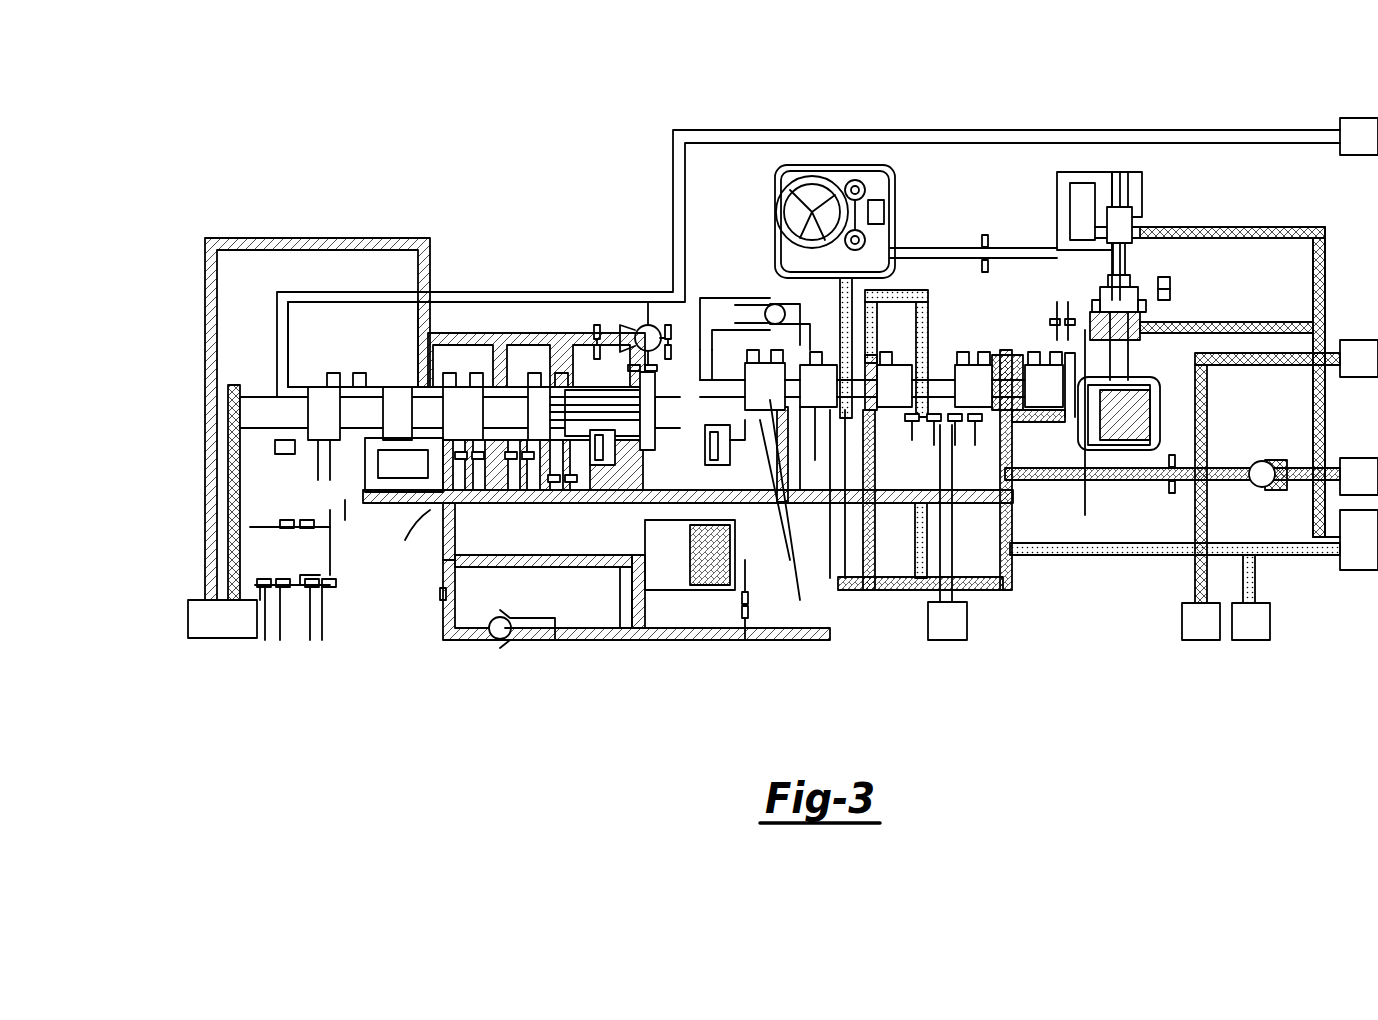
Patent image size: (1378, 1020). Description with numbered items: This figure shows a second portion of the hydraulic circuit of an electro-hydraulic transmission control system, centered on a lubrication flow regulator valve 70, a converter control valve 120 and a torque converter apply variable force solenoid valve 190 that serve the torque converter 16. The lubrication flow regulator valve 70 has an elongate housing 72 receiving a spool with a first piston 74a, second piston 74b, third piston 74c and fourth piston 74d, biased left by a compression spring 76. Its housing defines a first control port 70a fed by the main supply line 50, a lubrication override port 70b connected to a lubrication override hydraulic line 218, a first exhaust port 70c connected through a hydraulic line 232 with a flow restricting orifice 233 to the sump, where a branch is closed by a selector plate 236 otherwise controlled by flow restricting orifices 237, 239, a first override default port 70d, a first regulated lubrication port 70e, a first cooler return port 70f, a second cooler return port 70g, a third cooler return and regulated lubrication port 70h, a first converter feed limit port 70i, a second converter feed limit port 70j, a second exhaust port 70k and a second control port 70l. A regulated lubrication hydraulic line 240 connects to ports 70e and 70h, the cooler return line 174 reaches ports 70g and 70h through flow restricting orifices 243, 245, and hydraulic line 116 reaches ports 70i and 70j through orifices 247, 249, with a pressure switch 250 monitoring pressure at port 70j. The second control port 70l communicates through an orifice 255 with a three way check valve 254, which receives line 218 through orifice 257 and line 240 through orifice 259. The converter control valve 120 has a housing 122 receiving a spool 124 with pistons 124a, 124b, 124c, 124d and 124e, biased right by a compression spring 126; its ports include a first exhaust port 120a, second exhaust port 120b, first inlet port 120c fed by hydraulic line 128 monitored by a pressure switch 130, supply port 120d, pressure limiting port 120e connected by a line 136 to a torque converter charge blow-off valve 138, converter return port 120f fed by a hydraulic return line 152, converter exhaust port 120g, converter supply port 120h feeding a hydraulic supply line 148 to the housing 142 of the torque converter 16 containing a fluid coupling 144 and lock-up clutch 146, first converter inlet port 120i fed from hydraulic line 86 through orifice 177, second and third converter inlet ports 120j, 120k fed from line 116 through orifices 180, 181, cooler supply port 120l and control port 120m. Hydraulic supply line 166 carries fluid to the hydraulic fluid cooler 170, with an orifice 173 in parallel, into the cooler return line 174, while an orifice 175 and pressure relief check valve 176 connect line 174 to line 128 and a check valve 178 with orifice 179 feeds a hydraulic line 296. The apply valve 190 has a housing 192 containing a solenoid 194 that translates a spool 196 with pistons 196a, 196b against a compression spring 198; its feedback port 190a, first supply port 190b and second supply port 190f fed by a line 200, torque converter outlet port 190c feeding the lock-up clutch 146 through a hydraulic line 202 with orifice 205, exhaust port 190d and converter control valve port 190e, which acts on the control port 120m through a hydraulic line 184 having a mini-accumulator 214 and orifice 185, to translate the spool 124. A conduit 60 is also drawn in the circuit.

The torque converter 16 is at (893, 168).
The main supply line 50 is at (228, 492).
The conduit 60 is at (1235, 372).
The lubrication flow regulator valve 70 is at (308, 328).
The first control port 70a is at (230, 392).
The lubrication override port 70b is at (283, 380).
The first exhaust port 70c is at (325, 455).
The first override default port 70d is at (343, 420).
The first regulated lubrication port 70e is at (422, 388).
The first cooler return port 70f is at (445, 440).
The second cooler return port 70g is at (452, 455).
The third cooler return and regulated lubrication port 70h is at (490, 380).
The first converter feed limit port 70i is at (520, 470).
The second converter feed limit port 70j is at (597, 450).
The second exhaust port 70k is at (588, 380).
The second control port 70l is at (642, 420).
The elongate housing 72 is at (400, 395).
The first piston 74a is at (305, 440).
The second piston 74b is at (372, 398).
The third piston 74c is at (462, 400).
The fourth piston 74d is at (540, 395).
The compression spring 76 is at (612, 395).
The hydraulic line 86 is at (912, 525).
The hydraulic line 116 is at (930, 612).
The converter control valve 120 is at (1062, 445).
The first exhaust port 120a is at (705, 350).
The second exhaust port 120b is at (735, 442).
The first inlet port 120c is at (775, 425).
The first outlet or supply port 120d is at (810, 482).
The pressure limiting port 120e is at (823, 350).
The converter return port 120f is at (838, 362).
The converter exhaust port 120g is at (868, 422).
The converter supply port 120h is at (935, 370).
The first converter inlet port 120i is at (918, 420).
The second converter inlet port 120j is at (950, 440).
The third converter inlet port 120k is at (1007, 430).
The cooler supply port 120l is at (1005, 408).
The control port 120m is at (1063, 375).
The elongate housing 122 is at (825, 410).
The spool 124 is at (640, 378).
The first piston 124a is at (752, 372).
The second piston 124b is at (832, 402).
The third piston 124c is at (882, 402).
The fourth piston 124d is at (961, 402).
The fifth piston 124e is at (1032, 402).
The compression spring 126 is at (725, 368).
The hydraulic line 128 is at (605, 637).
The pressure switch 130 is at (660, 545).
The line 136 is at (797, 312).
The torque converter charge blow-off valve 138 is at (750, 300).
The housing 142 is at (828, 165).
The torque multiplying fluid coupling 144 is at (790, 208).
The lock-up clutch 146 is at (884, 212).
The hydraulic supply line 148 is at (925, 292).
The hydraulic return line 152 is at (848, 290).
The hydraulic supply line 166 is at (1135, 478).
The hydraulic fluid cooler 170 is at (698, 522).
The flow restricting orifice 173 is at (745, 620).
The cooler output or return line 174 is at (528, 565).
The flow restricting orifice 175 is at (438, 594).
The pressure relief check valve 176 is at (538, 642).
The flow restricting orifice 177 is at (928, 432).
The check valve 178 is at (1252, 487).
The flow restricting orifice 179 is at (1172, 493).
The flow restricting orifice 180 is at (945, 435).
The flow restricting orifice 181 is at (1000, 455).
The hydraulic line 184 is at (1085, 303).
The flow restricting orifice 185 is at (1088, 298).
The torque converter apply variable force solenoid valve 190 is at (1220, 275).
The feedback port 190a is at (1083, 175).
The first supply port 190b is at (1135, 225).
The torque converter outlet port 190c is at (1103, 250).
The exhaust port 190d is at (1097, 275).
The converter control valve port 190e is at (1080, 433).
The second supply port 190f is at (1145, 340).
The housing 192 is at (1125, 432).
The solenoid 194 is at (1130, 410).
The spool 196 is at (1125, 255).
The piston 196a is at (1130, 192).
The piston 196b is at (1150, 310).
The compression spring 198 is at (1133, 175).
The line 200 is at (1275, 230).
The hydraulic line 202 is at (1060, 178).
The flow restricting orifice 205 is at (985, 235).
The mini-accumulator 214 is at (1172, 288).
The lubrication override hydraulic line 218 is at (528, 292).
The hydraulic line 232 is at (345, 503).
The flow restricting orifice 233 is at (340, 540).
The selector plate 236 is at (272, 527).
The flow restricting orifice 237 is at (280, 612).
The flow restricting orifice 239 is at (325, 586).
The regulated lubrication hydraulic line 240 is at (286, 240).
The flow restricting orifice 243 is at (410, 539).
The flow restricting orifice 245 is at (470, 560).
The flow restricting orifice 247 is at (530, 455).
The flow restricting orifice 249 is at (580, 482).
The lubrication/pressure regulator valve pressure switch 250 is at (617, 465).
The three way check valve 254 is at (662, 330).
The flow restricting orifice 255 is at (652, 370).
The flow restricting orifice 257 is at (672, 318).
The flow restricting orifice 259 is at (592, 325).
The hydraulic line 296 is at (1300, 470).